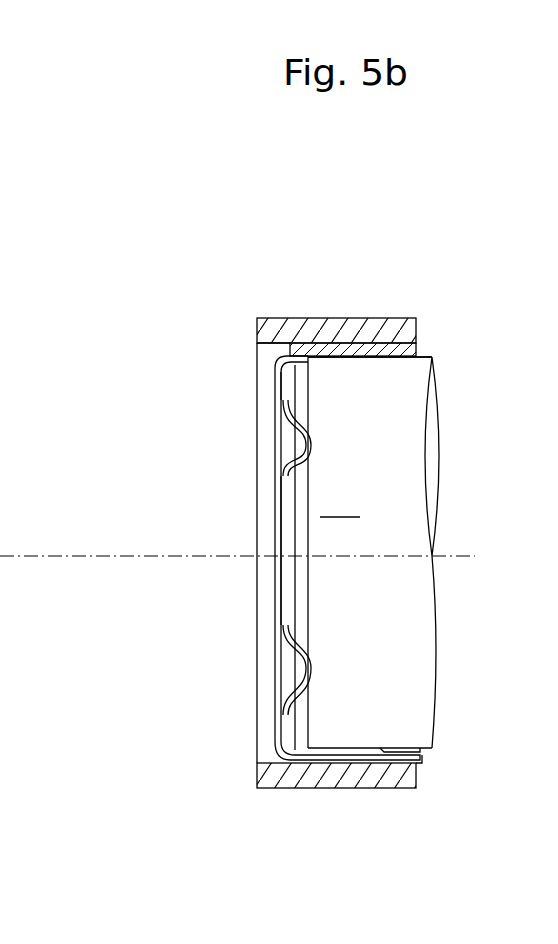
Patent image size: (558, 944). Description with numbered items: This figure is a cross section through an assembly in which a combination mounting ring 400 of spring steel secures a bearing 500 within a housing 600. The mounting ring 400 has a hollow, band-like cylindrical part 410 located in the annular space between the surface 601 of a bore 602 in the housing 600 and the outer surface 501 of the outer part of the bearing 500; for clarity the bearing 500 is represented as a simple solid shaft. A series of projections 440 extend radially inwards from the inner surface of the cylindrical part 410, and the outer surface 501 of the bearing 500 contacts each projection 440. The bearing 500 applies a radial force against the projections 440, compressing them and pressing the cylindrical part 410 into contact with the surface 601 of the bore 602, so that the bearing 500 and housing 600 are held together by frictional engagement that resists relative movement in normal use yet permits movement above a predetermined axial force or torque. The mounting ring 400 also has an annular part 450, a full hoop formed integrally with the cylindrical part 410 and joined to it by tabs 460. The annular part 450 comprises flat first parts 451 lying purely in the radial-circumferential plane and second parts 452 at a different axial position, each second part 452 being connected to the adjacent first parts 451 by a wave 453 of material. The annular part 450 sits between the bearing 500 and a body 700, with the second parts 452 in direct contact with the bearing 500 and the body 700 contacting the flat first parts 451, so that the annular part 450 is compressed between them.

The combination mounting ring 400 is at (277, 730).
The cylindrical part 410 is at (303, 343).
The projections 440 is at (363, 344).
The annular part 450 is at (278, 357).
The first part 451 is at (273, 556).
The second part 452 is at (298, 442).
The wave 453 is at (291, 413).
The tab 460 is at (266, 320).
The bearing 500 is at (373, 552).
The outer surface 501 is at (392, 358).
The housing 600 is at (393, 772).
The surface 601 is at (420, 765).
The bore 602 is at (420, 752).
The body 700 is at (225, 617).